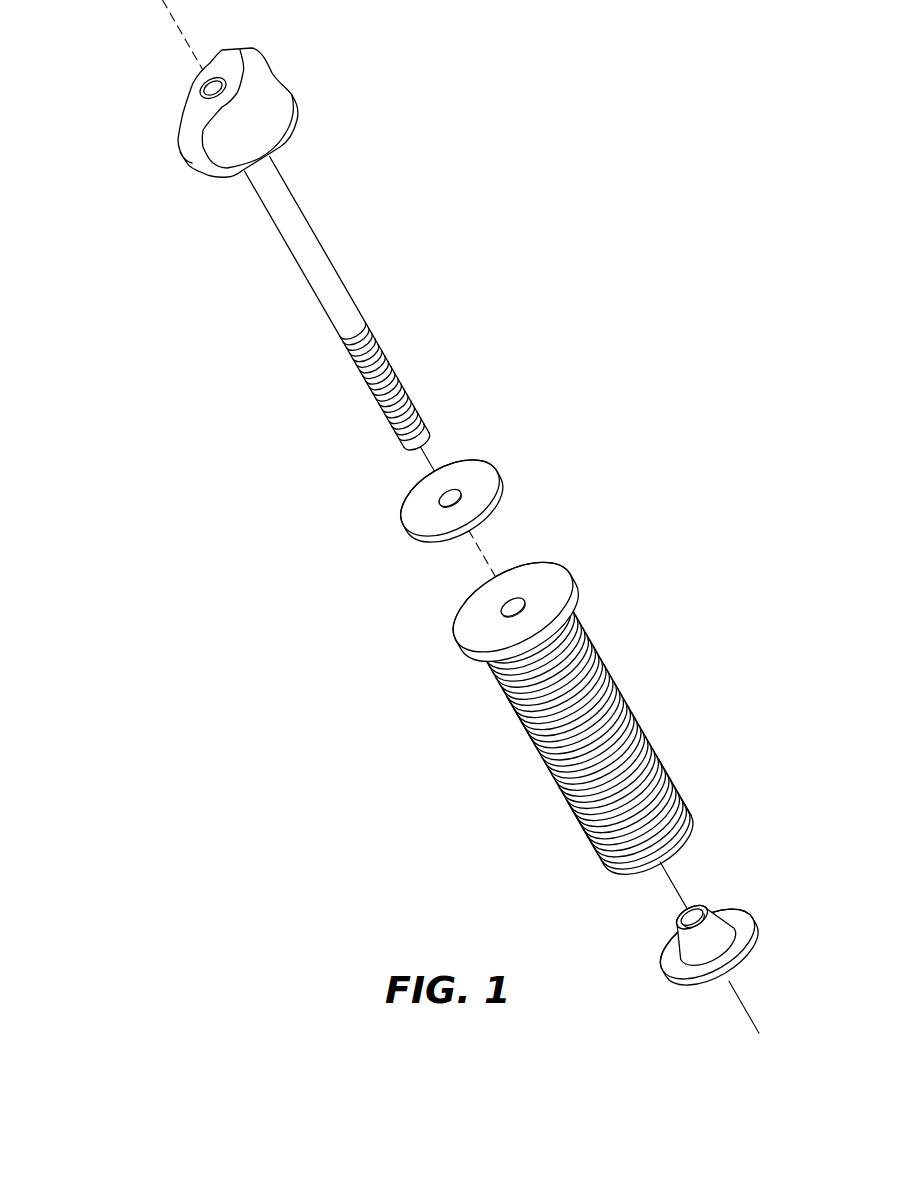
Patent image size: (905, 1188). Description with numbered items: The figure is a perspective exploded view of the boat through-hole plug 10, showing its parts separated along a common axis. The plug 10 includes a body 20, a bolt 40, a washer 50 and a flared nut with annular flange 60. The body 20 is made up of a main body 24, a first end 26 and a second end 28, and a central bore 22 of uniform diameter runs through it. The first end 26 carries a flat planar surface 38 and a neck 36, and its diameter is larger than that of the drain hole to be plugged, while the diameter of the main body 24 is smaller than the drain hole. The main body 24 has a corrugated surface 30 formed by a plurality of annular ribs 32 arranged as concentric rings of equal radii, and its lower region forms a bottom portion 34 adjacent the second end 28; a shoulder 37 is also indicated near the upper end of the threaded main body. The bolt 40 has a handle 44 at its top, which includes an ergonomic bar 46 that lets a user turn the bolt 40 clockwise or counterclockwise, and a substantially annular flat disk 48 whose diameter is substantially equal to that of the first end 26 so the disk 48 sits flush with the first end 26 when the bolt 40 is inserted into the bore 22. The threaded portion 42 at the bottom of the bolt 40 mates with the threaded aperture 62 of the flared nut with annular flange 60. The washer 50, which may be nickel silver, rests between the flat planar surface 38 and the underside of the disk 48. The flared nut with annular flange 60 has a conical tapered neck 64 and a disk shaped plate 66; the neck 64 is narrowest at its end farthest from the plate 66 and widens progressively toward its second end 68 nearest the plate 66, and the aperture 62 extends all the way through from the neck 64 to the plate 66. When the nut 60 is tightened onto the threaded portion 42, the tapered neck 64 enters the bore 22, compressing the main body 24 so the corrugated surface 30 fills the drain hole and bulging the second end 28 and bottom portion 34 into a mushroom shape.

The boat through-hole plug 10 is at (449, 545).
The body 20 is at (588, 714).
The central bore 22 is at (520, 597).
The main body 24 is at (582, 741).
The first end 26 is at (472, 653).
The second end 28 is at (620, 873).
The corrugated surface 30 is at (513, 715).
The annular ribs 32 is at (603, 813).
The bottom portion 34 is at (690, 835).
The neck 36 is at (577, 610).
The shoulder 37 is at (493, 672).
The flat planar surface 38 is at (527, 589).
The bolt 40 is at (300, 241).
The threaded portion 42 is at (402, 378).
The handle 44 is at (227, 134).
The ergonomic bar 46 is at (193, 123).
The annular flat disk 48 is at (208, 172).
The washer 50 is at (480, 470).
The flared nut with annular flange 60 is at (699, 947).
The threaded aperture 62 is at (690, 910).
The conical tapered neck 64 is at (715, 933).
The disk shaped plate 66 is at (673, 920).
The second end 68 is at (742, 965).